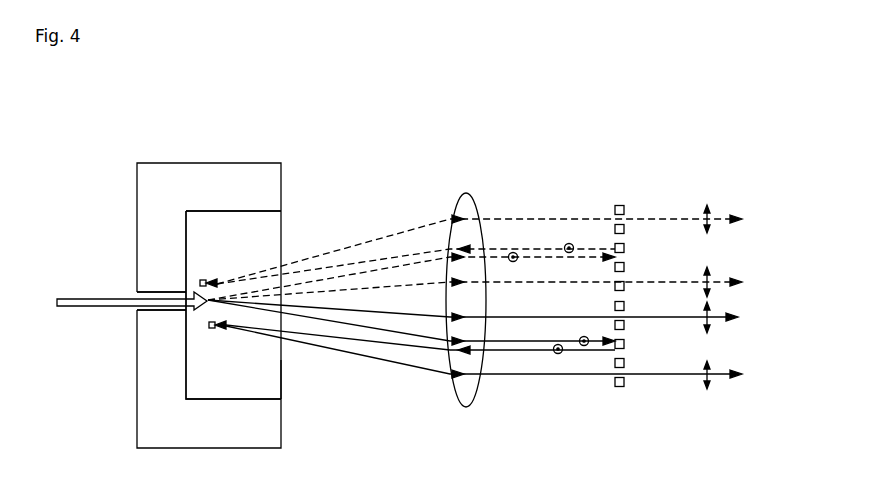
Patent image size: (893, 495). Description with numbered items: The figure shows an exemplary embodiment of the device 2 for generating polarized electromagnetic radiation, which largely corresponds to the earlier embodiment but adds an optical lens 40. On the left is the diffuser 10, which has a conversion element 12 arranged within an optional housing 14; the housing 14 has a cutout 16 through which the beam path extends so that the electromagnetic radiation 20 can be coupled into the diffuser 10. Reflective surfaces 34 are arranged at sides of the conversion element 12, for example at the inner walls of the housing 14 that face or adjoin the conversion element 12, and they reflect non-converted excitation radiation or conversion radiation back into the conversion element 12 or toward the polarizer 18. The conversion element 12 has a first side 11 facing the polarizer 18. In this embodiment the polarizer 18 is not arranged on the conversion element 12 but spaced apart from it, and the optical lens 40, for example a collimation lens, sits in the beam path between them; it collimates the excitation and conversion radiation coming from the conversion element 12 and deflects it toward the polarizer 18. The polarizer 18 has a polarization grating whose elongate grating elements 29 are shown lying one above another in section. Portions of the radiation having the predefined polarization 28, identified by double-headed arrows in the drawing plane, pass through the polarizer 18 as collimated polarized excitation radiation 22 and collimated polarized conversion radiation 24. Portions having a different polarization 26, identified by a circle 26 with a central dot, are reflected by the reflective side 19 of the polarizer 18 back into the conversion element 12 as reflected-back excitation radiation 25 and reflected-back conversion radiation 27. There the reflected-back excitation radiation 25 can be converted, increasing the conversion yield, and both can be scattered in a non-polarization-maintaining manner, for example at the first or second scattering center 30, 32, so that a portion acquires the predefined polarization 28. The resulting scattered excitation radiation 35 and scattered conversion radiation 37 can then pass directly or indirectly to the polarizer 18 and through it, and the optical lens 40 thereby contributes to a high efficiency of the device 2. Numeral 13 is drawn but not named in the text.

The device 2 is at (424, 88).
The diffuser 10 is at (247, 163).
The first side 11 is at (285, 383).
The conversion element 12 is at (232, 211).
The lower housing part 13 is at (137, 407).
The housing 14 is at (137, 232).
The cutout 16 is at (158, 290).
The polarizer 18 is at (632, 284).
The reflective side 19 is at (610, 208).
The electromagnetic radiation 20 is at (78, 308).
The polarized excitation radiation 22 is at (735, 318).
The polarized conversion radiation 24 is at (725, 216).
The reflected-back excitation radiation 25 is at (503, 352).
The different polarization 26 is at (513, 262).
The reflected-back conversion radiation 27 is at (542, 247).
The predefined polarization 28 is at (707, 205).
The grating elements 29 is at (620, 207).
The first scattering center 30 is at (212, 329).
The second scattering center 32 is at (203, 280).
The reflective surfaces 34 is at (222, 210).
The scattered excitation radiation 35 is at (408, 365).
The scattered conversion radiation 37 is at (388, 240).
The optical lens 40 is at (465, 193).